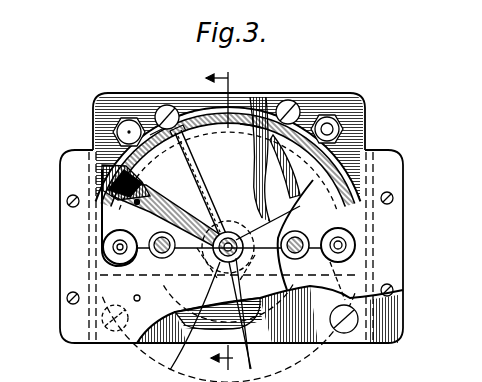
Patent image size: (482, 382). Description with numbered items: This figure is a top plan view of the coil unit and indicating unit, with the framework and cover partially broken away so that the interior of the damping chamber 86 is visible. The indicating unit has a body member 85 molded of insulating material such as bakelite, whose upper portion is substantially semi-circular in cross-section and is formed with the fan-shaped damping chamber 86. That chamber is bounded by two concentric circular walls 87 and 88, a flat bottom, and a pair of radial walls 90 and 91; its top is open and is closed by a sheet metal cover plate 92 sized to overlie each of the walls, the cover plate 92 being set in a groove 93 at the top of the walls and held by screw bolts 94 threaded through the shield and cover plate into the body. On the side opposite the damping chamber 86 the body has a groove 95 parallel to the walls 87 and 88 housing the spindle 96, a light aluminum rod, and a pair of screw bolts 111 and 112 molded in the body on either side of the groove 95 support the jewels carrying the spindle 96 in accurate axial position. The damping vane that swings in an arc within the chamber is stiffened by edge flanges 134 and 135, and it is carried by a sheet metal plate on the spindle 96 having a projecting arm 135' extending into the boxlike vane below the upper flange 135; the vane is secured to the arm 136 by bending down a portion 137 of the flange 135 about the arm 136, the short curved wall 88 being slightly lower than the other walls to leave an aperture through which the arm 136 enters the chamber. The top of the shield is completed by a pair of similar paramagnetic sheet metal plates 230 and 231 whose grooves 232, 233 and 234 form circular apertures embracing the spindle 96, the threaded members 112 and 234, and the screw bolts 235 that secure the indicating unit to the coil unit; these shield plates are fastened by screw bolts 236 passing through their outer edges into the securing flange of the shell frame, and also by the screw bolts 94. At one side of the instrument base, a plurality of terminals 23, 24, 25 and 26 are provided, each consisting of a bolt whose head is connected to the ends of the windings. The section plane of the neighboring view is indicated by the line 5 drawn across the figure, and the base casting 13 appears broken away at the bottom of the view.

The section line 5- 5 is at (213, 215).
The base casting 13 is at (195, 326).
The terminal 23 is at (327, 118).
The terminal 24 is at (250, 126).
The terminal 25 is at (202, 112).
The terminal 26 is at (129, 120).
The body member 85 is at (330, 196).
The damping chamber 86 is at (113, 152).
The concentric circular wall 87 is at (262, 180).
The short curved wall 88 is at (263, 193).
The radial wall 90 is at (167, 215).
The radial wall 91 is at (286, 166).
The cover plate 92 is at (290, 153).
The groove 93 is at (110, 182).
The screw bolt 94 is at (137, 202).
The groove 95 is at (246, 322).
The spindle 96 is at (230, 285).
The screw bolt 111 is at (300, 236).
The screw bolt 112 is at (150, 240).
The flange 134 is at (187, 134).
The upper flange 135 is at (178, 152).
The projecting arm 135' is at (176, 322).
The arm 136 is at (203, 176).
The bent-down portion 137 is at (228, 231).
The shield plate 230 is at (392, 278).
The shield plate 231 is at (395, 228).
The groove 232 is at (234, 262).
The groove 233 is at (180, 274).
The threaded member 234 is at (354, 234).
The screw bolt 235 is at (117, 253).
The screw bolt 236 is at (394, 202).